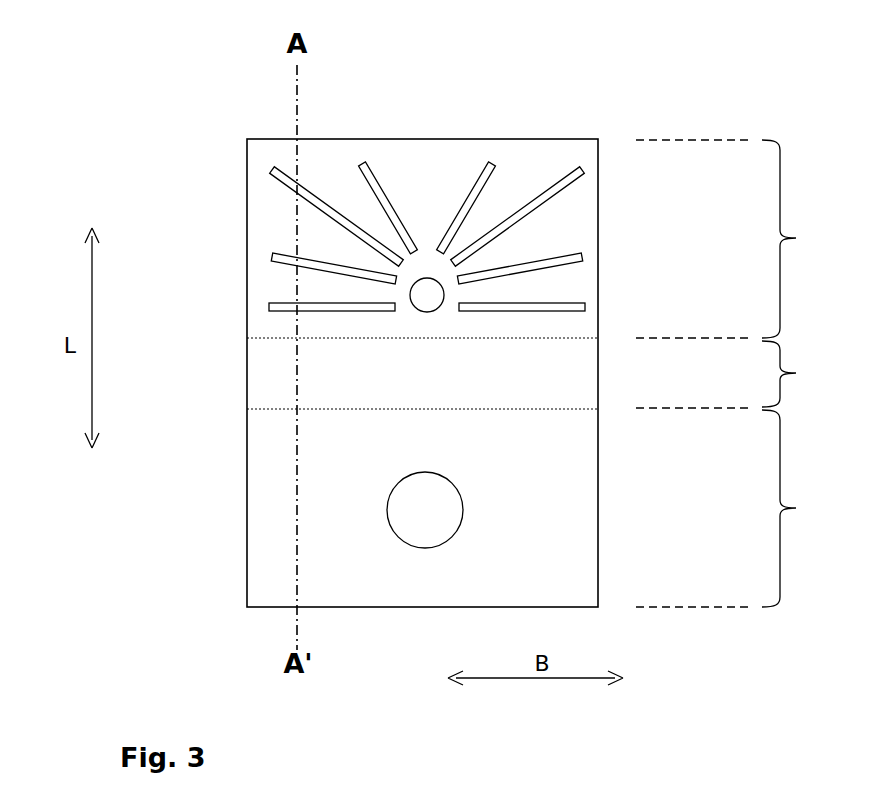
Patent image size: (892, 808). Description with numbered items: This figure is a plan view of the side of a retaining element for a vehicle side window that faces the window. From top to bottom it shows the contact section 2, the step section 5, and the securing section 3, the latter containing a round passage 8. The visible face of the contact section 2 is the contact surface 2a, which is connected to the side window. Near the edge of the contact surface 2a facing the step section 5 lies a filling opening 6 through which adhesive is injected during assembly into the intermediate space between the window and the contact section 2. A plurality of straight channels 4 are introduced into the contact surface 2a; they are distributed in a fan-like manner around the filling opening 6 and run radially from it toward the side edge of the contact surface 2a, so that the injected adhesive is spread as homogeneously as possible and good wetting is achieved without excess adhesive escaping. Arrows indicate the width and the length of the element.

The contact section 2 is at (730, 239).
The contact surface 2a is at (535, 162).
The securing section 3 is at (734, 508).
The channel 4 is at (361, 163).
The step section 5 is at (731, 374).
The filling opening 6 is at (427, 278).
The passage 8 is at (437, 522).